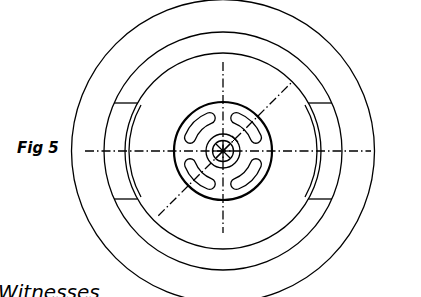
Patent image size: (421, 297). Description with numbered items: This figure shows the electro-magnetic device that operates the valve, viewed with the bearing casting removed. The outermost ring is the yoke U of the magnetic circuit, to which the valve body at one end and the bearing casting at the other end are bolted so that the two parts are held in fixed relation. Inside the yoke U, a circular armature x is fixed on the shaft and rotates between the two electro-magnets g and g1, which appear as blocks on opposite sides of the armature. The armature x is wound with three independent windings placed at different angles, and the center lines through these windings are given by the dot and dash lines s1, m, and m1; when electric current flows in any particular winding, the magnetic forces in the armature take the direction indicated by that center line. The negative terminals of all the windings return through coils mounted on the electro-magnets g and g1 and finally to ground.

The yoke U is at (223, 148).
The circular armature x is at (148, 93).
The electro-magnet g is at (124, 151).
The electro-magnet g1 is at (320, 151).
The center line of armature winding s1 is at (139, 151).
The center line of armature winding m is at (187, 183).
The center line of armature winding m1 is at (217, 152).